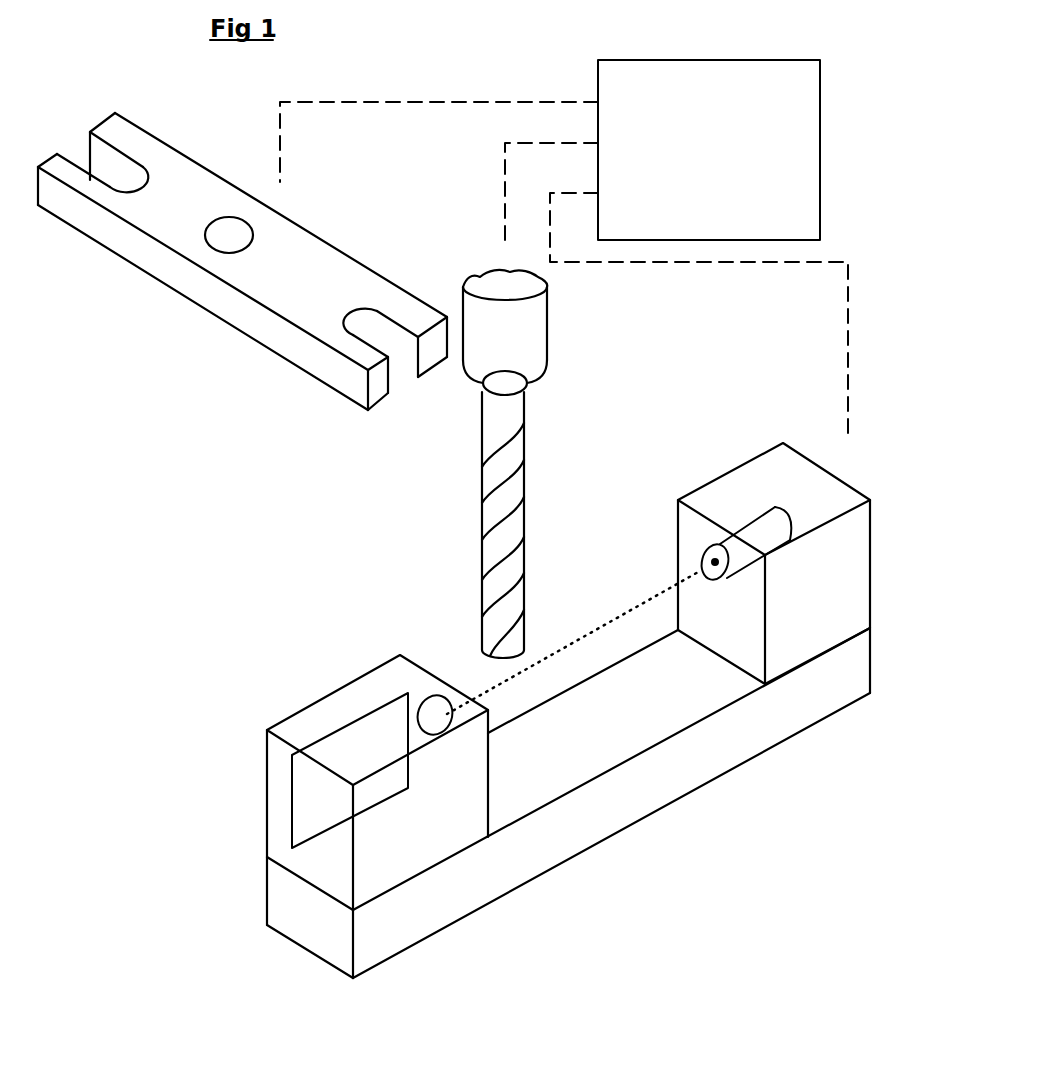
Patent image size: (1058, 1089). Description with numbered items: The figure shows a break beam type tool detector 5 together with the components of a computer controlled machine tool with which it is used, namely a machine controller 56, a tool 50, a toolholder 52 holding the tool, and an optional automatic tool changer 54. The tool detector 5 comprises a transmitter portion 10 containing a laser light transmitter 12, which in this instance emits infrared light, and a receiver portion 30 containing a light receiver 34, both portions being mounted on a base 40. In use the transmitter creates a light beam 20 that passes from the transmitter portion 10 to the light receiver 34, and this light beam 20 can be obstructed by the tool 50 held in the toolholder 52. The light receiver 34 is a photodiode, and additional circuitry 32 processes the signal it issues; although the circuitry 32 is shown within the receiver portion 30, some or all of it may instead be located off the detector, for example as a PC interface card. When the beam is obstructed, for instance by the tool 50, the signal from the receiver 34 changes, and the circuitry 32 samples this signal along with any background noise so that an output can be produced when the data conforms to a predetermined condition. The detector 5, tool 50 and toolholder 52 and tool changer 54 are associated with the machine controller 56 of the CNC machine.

The break beam type tool detector 5 is at (309, 609).
The transmitter portion 10 is at (782, 622).
The laser light transmitter 12 is at (777, 522).
The light beam 20 is at (567, 645).
The receiver portion 30 is at (440, 786).
The additional circuitry 32 is at (313, 807).
The light receiver 34 is at (453, 718).
The base 40 is at (692, 755).
The tool 50 is at (512, 493).
The toolholder 52 is at (520, 327).
The automatic tool changer 54 is at (183, 277).
The machine controller 56 is at (702, 88).